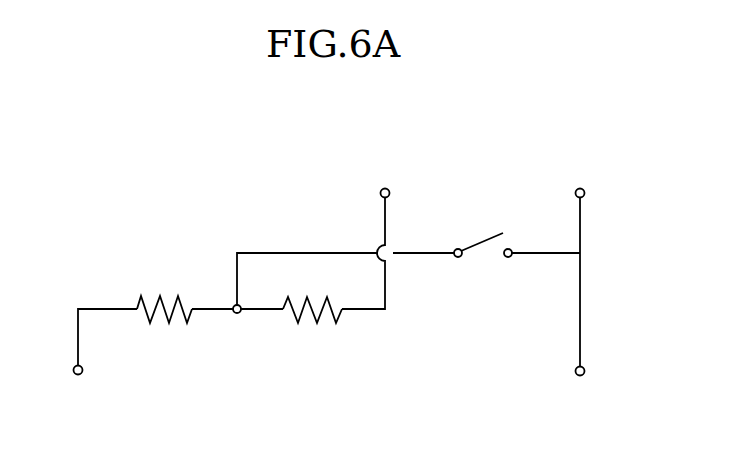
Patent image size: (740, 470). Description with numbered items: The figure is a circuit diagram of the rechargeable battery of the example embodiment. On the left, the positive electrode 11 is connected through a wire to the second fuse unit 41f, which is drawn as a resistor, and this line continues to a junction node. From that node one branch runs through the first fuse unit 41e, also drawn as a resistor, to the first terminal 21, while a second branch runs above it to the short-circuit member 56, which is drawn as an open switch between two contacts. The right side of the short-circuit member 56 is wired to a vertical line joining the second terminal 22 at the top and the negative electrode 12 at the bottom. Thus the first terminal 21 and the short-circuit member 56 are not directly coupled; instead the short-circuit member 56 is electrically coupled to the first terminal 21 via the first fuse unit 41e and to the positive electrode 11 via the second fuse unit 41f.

The positive electrode 11 is at (76, 374).
The negative electrode 12 is at (578, 375).
The first terminal 21 is at (387, 189).
The second terminal 22 is at (582, 189).
The first fuse unit 41e is at (322, 317).
The second fuse unit 41f is at (172, 316).
The short-circuit member 56 is at (484, 243).